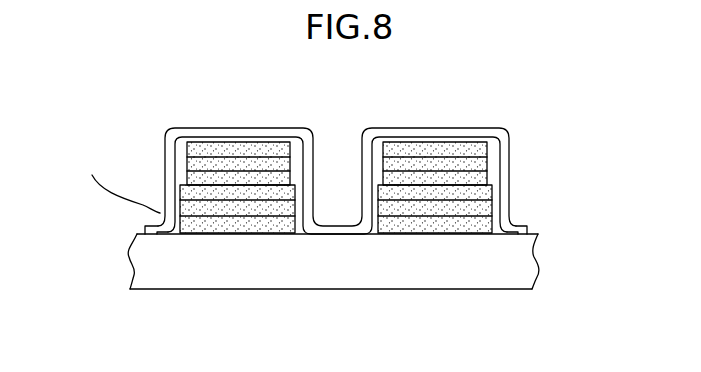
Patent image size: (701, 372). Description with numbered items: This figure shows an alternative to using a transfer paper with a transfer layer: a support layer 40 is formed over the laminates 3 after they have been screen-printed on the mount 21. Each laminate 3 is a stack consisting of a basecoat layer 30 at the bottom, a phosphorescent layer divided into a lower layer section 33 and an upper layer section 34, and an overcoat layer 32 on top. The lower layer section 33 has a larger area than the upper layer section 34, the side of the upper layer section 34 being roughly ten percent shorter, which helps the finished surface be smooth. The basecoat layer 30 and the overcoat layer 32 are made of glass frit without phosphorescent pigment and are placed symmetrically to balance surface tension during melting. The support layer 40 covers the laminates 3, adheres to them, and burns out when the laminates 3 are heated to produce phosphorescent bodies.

The laminate 3 is at (185, 120).
The mount 21 is at (540, 263).
The basecoat layer 30 is at (513, 227).
The overcoat layer 32 is at (237, 141).
The lower layer section 33 is at (490, 208).
The upper layer section 34 is at (485, 162).
The support layer 40 is at (115, 185).